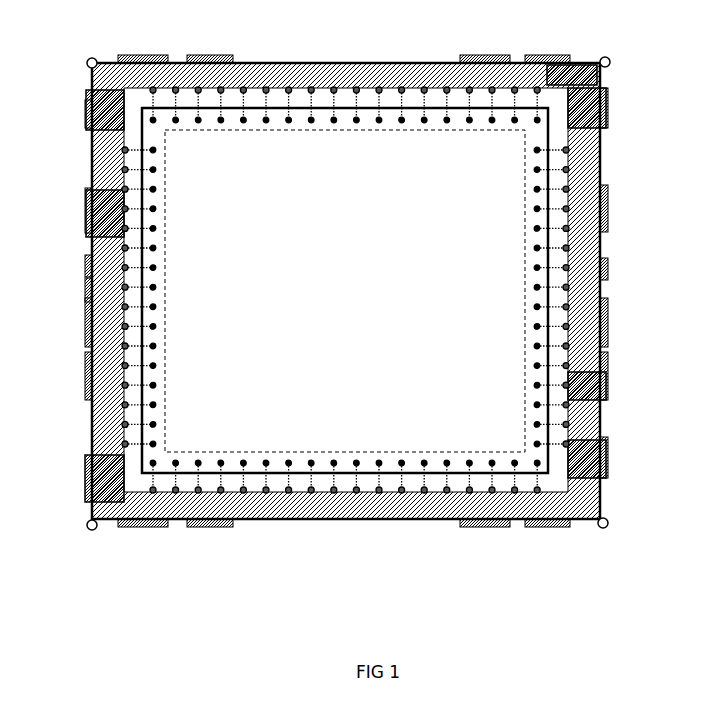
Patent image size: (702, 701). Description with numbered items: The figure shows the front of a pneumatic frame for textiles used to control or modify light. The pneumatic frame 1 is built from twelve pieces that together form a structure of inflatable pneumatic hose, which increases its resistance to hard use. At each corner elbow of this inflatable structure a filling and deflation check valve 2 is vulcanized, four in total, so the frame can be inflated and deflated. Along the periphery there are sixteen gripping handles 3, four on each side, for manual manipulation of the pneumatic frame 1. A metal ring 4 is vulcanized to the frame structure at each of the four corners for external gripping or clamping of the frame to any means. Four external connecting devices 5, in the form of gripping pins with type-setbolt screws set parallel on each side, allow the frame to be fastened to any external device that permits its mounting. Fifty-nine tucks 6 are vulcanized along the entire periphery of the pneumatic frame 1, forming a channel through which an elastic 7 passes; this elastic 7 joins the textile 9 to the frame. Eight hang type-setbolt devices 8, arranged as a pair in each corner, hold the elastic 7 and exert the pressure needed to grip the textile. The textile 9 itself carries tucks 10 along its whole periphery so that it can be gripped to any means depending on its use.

The pneumatic frame 1 is at (602, 150).
The filling and deflation check valve 2 is at (88, 77).
The gripping handle 3 is at (86, 110).
The metal ring 4 is at (86, 63).
The external connecting device 5 is at (606, 282).
The tuck 6 is at (90, 342).
The elastic 7 is at (90, 243).
The hang type-setbolt device 8 is at (604, 96).
The textile 9 is at (505, 352).
The tuck 10 is at (140, 446).